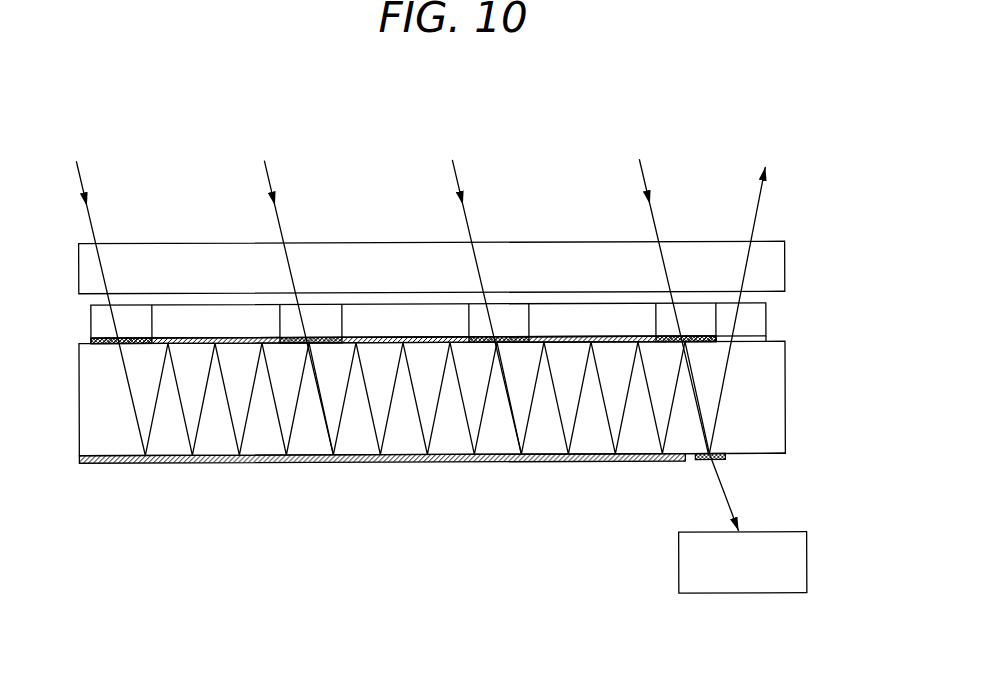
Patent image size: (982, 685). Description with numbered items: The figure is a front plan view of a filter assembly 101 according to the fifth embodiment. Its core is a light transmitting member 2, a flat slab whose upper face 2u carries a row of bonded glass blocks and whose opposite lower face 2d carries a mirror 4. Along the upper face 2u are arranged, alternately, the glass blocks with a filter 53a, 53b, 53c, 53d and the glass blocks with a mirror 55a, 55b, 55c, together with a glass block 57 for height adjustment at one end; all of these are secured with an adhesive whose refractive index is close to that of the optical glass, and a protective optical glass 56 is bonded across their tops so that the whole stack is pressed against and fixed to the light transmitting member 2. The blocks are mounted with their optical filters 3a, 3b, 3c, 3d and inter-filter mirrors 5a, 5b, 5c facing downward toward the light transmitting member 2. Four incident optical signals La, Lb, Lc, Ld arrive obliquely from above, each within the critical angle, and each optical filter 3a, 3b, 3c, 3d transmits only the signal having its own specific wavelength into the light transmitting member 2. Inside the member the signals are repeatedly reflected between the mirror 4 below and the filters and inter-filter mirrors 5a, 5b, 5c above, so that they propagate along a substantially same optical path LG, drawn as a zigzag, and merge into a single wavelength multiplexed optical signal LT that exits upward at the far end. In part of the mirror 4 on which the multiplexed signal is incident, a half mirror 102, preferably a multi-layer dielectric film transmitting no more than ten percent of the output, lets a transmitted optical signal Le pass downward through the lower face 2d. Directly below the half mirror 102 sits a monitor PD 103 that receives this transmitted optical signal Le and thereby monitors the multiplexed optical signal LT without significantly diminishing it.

The filter assembly 101 is at (412, 143).
The protective optical glass 56 is at (786, 247).
The glass block for height adjustment 57 is at (767, 312).
The upper face of the light transmitting member 2u is at (767, 337).
The light transmitting member 2 is at (787, 368).
The lower surface of light guide 2d is at (777, 456).
The optical filter 3a is at (104, 343).
The optical filter 3b is at (295, 343).
The optical filter 3c is at (483, 343).
The optical filter 3d is at (680, 343).
The inter-filter mirror 5a is at (207, 343).
The inter-filter mirror 5b is at (390, 343).
The inter-filter mirror 5c is at (577, 343).
The mirror 4 is at (570, 459).
The half mirror 102 is at (713, 461).
The monitor PD 103 is at (807, 573).
The optical path LG is at (436, 425).
The incident light a La is at (80, 172).
The incident light b Lb is at (268, 172).
The incident light c Lc is at (456, 172).
The incident light d Ld is at (643, 172).
The wavelength multiplexed optical signal LT is at (763, 193).
The transmitted optical signal Le is at (728, 508).
The glass block with a filter 53a is at (133, 290).
The glass block with a mirror 55a is at (207, 290).
The glass block with a filter 53b is at (325, 290).
The glass block with a mirror 55b is at (407, 290).
The glass block with a filter 53c is at (512, 290).
The glass block with a mirror 55c is at (590, 290).
The glass block with a filter 53d is at (699, 290).